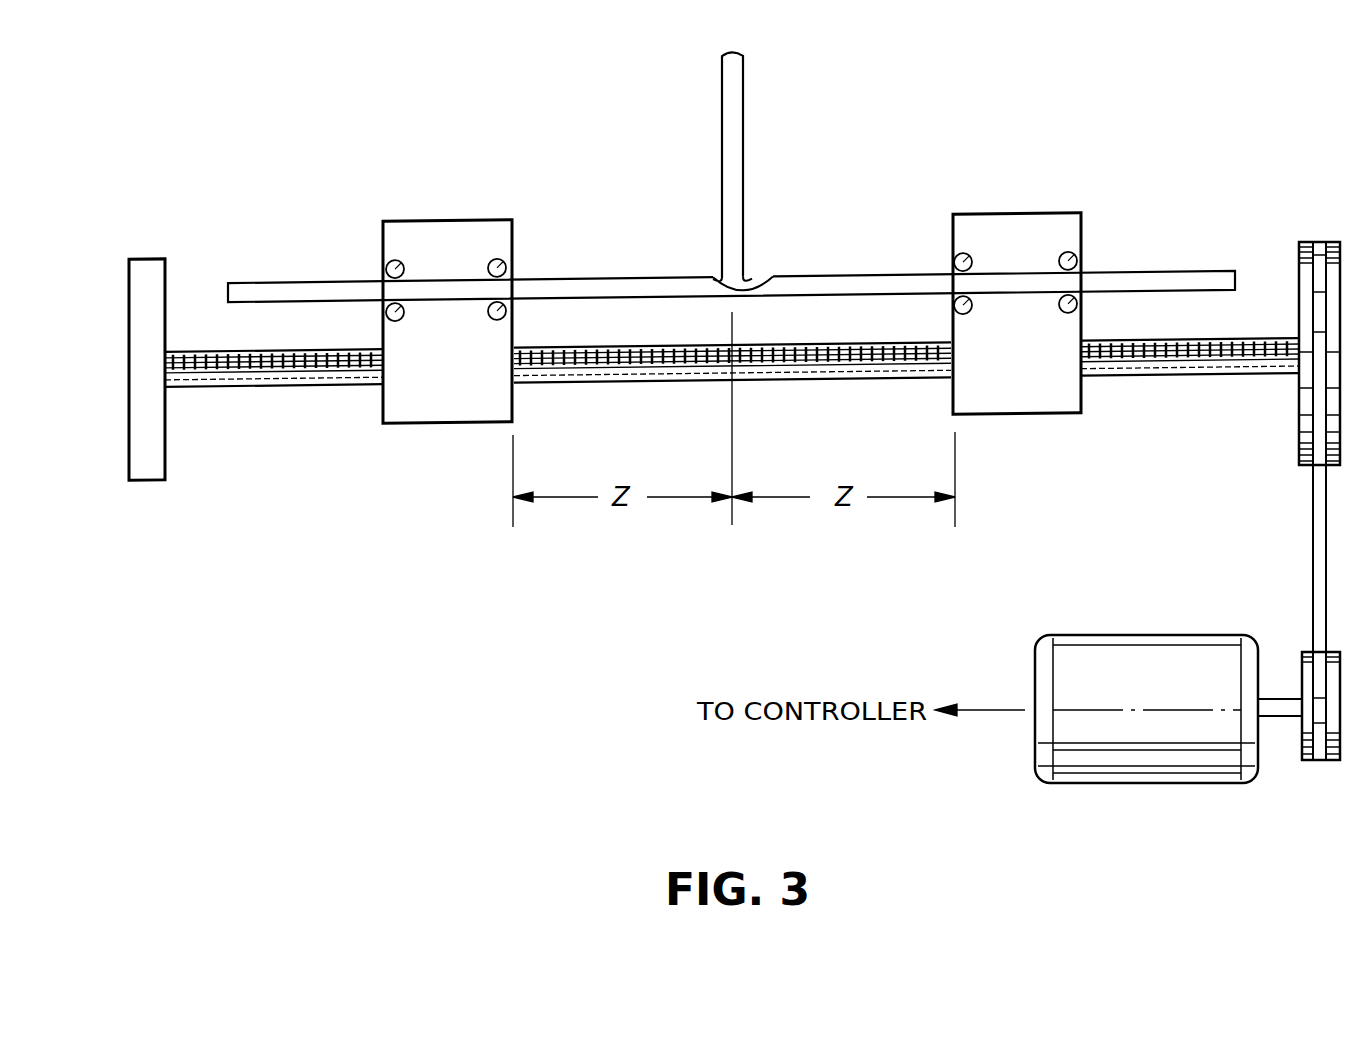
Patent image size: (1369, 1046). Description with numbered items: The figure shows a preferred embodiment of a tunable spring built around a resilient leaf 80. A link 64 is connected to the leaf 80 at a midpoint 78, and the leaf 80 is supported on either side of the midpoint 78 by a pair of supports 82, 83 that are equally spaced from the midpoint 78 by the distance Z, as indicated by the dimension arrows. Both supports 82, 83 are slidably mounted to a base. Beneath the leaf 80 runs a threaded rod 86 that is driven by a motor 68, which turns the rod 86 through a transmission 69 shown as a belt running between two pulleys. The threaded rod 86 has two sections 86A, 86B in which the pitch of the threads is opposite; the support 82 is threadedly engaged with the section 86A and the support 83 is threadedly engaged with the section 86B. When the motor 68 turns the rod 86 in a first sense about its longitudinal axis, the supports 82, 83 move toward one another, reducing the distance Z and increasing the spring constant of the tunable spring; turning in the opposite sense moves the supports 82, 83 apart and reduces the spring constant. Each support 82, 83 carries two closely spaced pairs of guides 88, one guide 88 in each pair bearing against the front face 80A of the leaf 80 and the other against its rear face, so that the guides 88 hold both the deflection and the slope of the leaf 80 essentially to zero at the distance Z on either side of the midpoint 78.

The link 64 is at (739, 117).
The motor 68 is at (1130, 634).
The transmission 69 is at (1312, 536).
The midpoint 78 is at (773, 278).
The resilient leaf 80 is at (1172, 271).
The front face 80A is at (276, 282).
The support 82 is at (425, 424).
The support 83 is at (1030, 416).
The threaded rod 86 is at (732, 403).
The section 86A is at (315, 388).
The section 86B is at (1232, 374).
The guides 88 is at (386, 264).